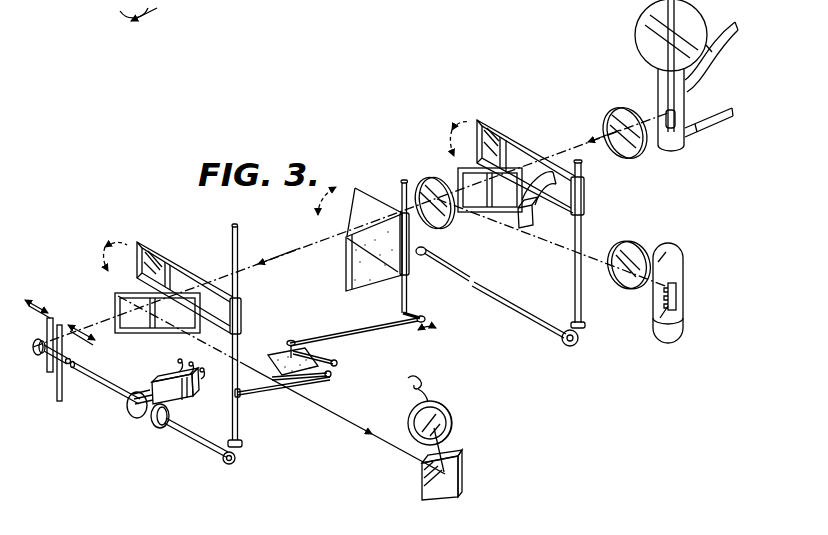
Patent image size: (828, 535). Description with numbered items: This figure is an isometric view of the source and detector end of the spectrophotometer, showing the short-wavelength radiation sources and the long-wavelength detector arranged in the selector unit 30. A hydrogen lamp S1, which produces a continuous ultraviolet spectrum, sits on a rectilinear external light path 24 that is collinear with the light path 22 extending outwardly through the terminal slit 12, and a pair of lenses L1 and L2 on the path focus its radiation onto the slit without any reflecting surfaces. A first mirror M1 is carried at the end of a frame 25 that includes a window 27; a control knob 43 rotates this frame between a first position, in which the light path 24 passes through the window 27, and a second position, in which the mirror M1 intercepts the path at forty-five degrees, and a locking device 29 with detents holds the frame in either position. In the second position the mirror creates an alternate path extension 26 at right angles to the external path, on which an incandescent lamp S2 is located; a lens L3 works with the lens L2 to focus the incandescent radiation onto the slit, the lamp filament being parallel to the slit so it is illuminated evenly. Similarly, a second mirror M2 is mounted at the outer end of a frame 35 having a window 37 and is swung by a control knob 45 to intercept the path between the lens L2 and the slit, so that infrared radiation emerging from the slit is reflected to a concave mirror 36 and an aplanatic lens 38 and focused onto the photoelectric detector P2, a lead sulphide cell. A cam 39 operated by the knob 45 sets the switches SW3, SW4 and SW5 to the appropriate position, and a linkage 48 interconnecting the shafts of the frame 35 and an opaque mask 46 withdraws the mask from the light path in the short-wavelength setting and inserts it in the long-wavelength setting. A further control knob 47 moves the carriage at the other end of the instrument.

The control knob 47 is at (120, 12).
The terminal slit 12 is at (60, 326).
The light path 22 is at (24, 353).
The control knob 45 is at (88, 392).
The switch SW5 is at (136, 414).
The switch SW4 is at (152, 415).
The switch SW3 is at (160, 428).
The cam 39 is at (168, 427).
The mirror M2 is at (155, 252).
The frame 35 is at (188, 264).
The window 37 is at (192, 282).
The external light path 24 is at (283, 256).
The opaque mask 46 is at (347, 268).
The linkage 48 is at (277, 352).
The control knob 43 is at (448, 269).
The aplanatic lens 38 is at (408, 423).
The photoelectric detector P2 is at (453, 421).
The concave mirror 36 is at (460, 479).
The lens L2 is at (425, 180).
The mirror M1 is at (484, 124).
The frame 25 is at (521, 143).
The window 27 is at (532, 160).
The locking device 29 is at (528, 228).
The alternate path extension 26 is at (596, 258).
The lens L3 is at (645, 244).
The hydrogen lamp S1 is at (686, 90).
The lens L1 is at (624, 109).
The incandescent lamp S2 is at (684, 296).
The selector unit 30 is at (553, 372).